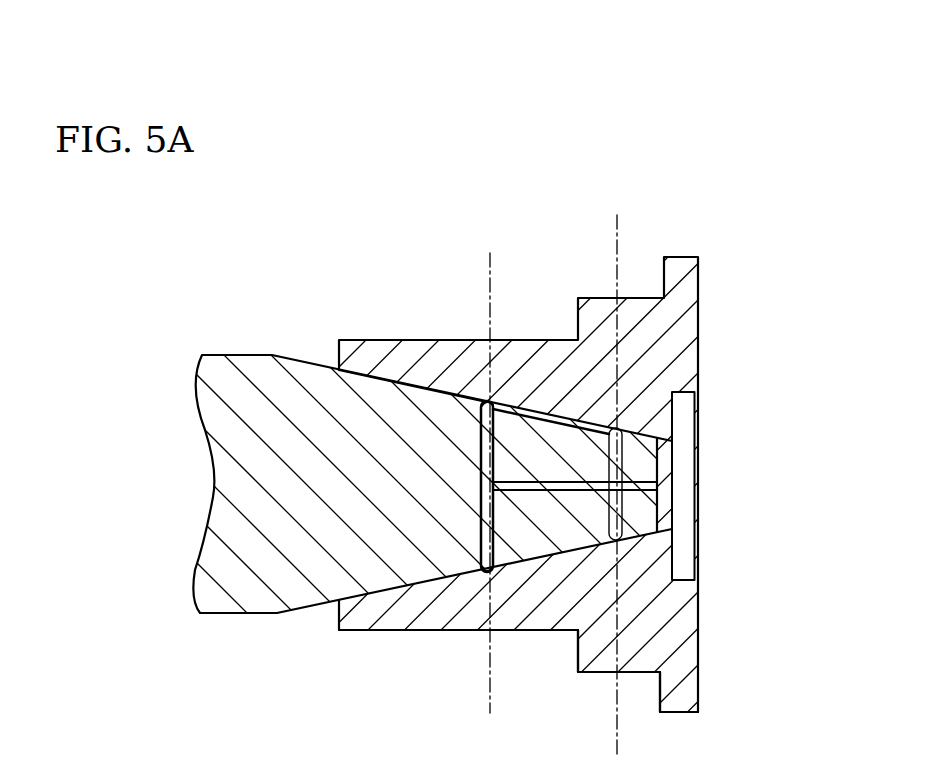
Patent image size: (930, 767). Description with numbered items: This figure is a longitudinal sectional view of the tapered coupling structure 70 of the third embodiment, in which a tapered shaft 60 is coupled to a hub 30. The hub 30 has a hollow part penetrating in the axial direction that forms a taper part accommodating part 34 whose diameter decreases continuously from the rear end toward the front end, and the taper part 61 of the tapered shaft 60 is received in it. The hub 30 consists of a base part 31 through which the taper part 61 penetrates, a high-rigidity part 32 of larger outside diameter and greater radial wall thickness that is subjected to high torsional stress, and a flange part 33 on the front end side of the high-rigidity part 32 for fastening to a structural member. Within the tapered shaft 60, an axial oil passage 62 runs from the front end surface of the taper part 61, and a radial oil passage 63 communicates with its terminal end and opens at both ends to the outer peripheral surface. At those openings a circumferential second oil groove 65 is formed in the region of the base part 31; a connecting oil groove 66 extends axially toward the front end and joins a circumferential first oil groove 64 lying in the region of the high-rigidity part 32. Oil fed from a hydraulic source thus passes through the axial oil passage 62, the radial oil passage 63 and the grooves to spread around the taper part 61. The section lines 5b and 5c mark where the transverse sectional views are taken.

The coupling structure 70 is at (301, 301).
The tapered shaft 60 is at (224, 354).
The taper part 61 is at (393, 381).
The hub 30 is at (384, 636).
The base part 31 is at (555, 631).
The high-rigidity part 32 is at (592, 673).
The flange part 33 is at (690, 713).
The taper part accommodating part 34 is at (479, 575).
The axial oil passage 62 is at (635, 484).
The radial oil passage 63 is at (493, 430).
The first oil groove 64 is at (672, 385).
The second oil groove 65 is at (483, 403).
The connecting oil groove 66 is at (573, 426).
The line 5b- 5b is at (620, 232).
The line 5c- 5c is at (490, 259).